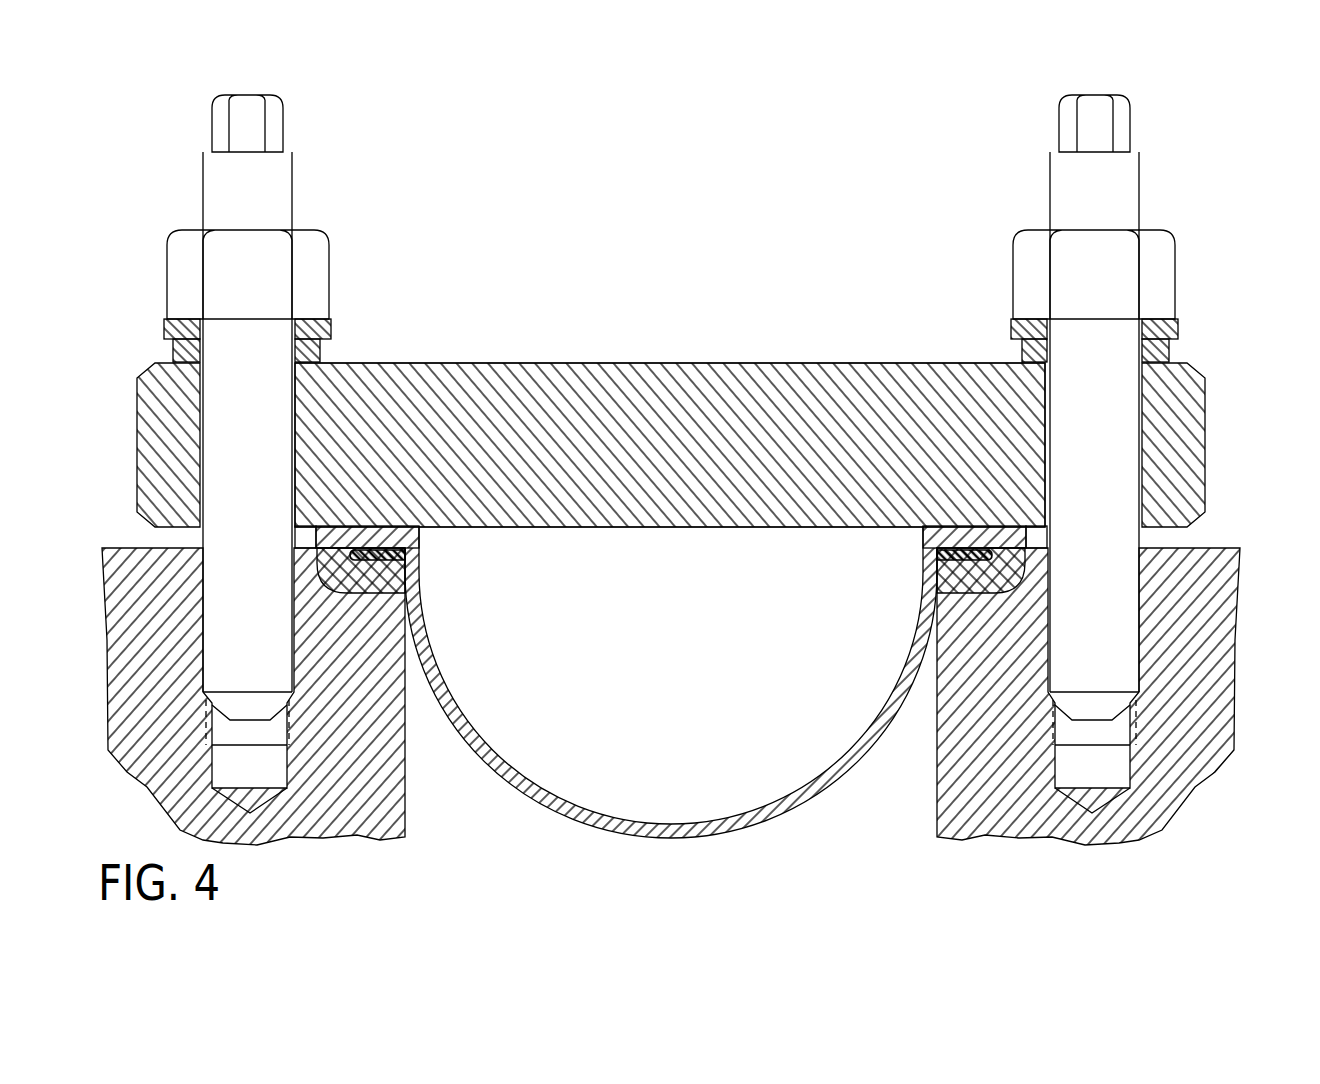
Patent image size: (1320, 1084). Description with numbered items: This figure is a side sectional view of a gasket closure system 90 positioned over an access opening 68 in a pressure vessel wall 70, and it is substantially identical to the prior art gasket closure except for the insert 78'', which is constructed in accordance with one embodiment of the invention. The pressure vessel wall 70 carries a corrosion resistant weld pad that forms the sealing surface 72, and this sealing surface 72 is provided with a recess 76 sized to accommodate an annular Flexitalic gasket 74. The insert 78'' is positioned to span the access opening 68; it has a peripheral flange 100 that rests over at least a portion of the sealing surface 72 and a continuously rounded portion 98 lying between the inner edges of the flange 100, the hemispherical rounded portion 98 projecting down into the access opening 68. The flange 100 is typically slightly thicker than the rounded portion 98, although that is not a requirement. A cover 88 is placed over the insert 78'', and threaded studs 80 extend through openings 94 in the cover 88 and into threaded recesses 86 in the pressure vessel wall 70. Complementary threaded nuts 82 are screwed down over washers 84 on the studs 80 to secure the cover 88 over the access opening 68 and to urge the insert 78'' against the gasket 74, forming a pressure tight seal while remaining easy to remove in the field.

The access opening 68 is at (682, 882).
The pressure vessel wall 70 is at (1233, 610).
The weld pad sealing surface 72 is at (380, 555).
The gasket 74 is at (947, 608).
The recess 76 is at (942, 585).
The insert 78'' is at (671, 698).
The threaded studs 80 is at (1137, 204).
The threaded nuts 82 is at (1168, 287).
The washers 84 is at (1168, 353).
The threaded recesses 86 is at (1123, 730).
The cover 88 is at (758, 362).
The closure system 90 is at (598, 237).
The openings 94 is at (1145, 472).
The rounded portion 98 is at (612, 830).
The peripheral flange 100 is at (940, 535).